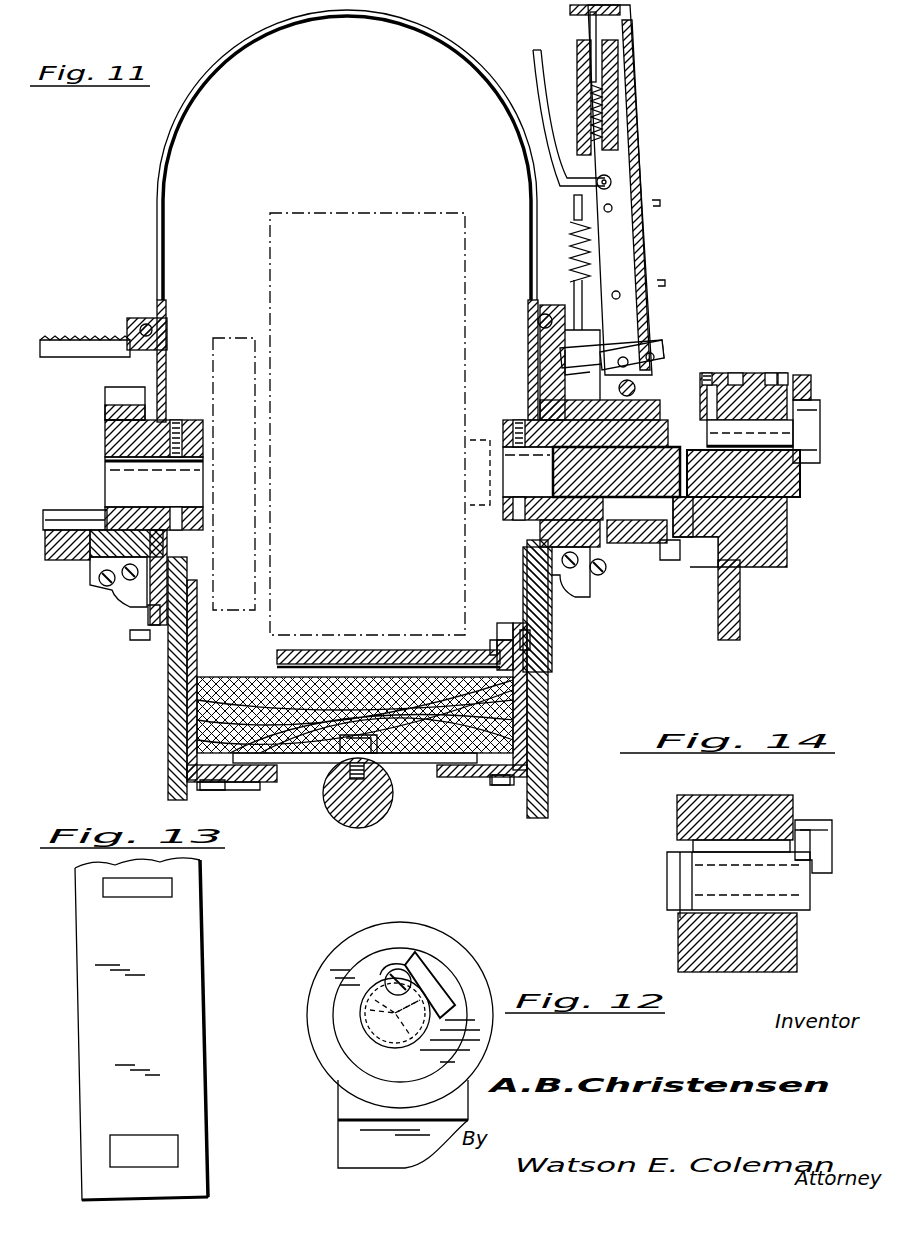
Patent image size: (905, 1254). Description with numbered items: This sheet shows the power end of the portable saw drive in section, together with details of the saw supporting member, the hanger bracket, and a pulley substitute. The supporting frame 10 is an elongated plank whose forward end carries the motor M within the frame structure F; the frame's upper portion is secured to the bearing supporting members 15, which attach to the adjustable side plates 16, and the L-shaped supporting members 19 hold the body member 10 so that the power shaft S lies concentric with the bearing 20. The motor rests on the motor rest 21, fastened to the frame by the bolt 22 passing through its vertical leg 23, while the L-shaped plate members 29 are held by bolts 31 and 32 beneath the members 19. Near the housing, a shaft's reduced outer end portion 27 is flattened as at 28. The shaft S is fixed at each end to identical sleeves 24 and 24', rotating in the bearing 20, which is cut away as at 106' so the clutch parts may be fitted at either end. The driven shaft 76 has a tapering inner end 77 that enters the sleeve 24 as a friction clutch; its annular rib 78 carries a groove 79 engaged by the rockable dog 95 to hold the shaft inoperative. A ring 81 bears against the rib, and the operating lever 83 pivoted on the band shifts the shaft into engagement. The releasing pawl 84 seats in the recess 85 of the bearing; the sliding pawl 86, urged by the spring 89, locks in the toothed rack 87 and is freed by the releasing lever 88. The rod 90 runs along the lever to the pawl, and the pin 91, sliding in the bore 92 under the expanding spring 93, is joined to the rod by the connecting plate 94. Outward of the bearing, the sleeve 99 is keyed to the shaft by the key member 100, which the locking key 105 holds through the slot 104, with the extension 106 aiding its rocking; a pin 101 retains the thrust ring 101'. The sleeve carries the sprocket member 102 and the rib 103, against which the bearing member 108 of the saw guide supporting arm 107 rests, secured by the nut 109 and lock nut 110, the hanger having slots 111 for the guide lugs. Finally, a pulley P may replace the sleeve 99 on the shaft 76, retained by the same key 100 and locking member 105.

In FIG. 11, the frame structure F is at (168, 205).
In FIG. 11, the motor M is at (390, 213).
In FIG. 11, the power shaft S is at (470, 462).
In FIG. 14, the pulley P is at (677, 822).
In FIG. 11, the supporting frame 10 is at (250, 677).
In FIG. 11, the bearing supporting members 15 is at (145, 622).
In FIG. 11, the adjustable side plates 16 is at (168, 722).
In FIG. 11, the L-shaped supporting members 19 is at (192, 677).
In FIG. 11, the bearing 20 is at (68, 560).
In FIG. 11, the motor rest 21 is at (310, 650).
In FIG. 11, the bolt 22 is at (500, 642).
In FIG. 11, the leg 23 is at (503, 625).
In FIG. 11, the sleeve 24 is at (573, 458).
In FIG. 11, the sleeve 24' is at (157, 416).
In FIG. 11, the reduced outer end portion 27 is at (350, 828).
In FIG. 11, the flattened upper surface 28 is at (390, 808).
In FIG. 11, the L-shaped plate members 29 is at (305, 765).
In FIG. 11, the bolts 31 is at (358, 735).
In FIG. 11, the bolts 32 is at (500, 787).
In FIG. 11, the driven shaft 76 is at (800, 498).
In FIG. 12, the driven shaft 76 is at (398, 1030).
In FIG. 14, the driven shaft 76 is at (760, 925).
In FIG. 11, the inner end 77 is at (553, 470).
In FIG. 11, the annular rib 78 is at (642, 545).
In FIG. 11, the annular groove 79 is at (660, 374).
In FIG. 11, the ring 81 is at (636, 390).
In FIG. 11, the operating lever 83 is at (645, 229).
In FIG. 11, the releasing pawl 84 is at (590, 368).
In FIG. 11, the recess 85 is at (540, 390).
In FIG. 11, the longitudinally movable pawl 86 is at (574, 203).
In FIG. 11, the toothed rack 87 is at (80, 340).
In FIG. 11, the releasing lever 88 is at (542, 80).
In FIG. 11, the spring 89 is at (570, 245).
In FIG. 11, the rod 90 is at (620, 35).
In FIG. 11, the pin 91 is at (590, 28).
In FIG. 11, the bore 92 is at (618, 88).
In FIG. 11, the expanding spring 93 is at (618, 128).
In FIG. 11, the connecting plate 94 is at (625, 12).
In FIG. 11, the rockable dog 95 is at (105, 585).
In FIG. 11, the sleeve 99 is at (790, 402).
In FIG. 12, the sleeve 99 is at (352, 1040).
In FIG. 11, the key member 100 is at (762, 375).
In FIG. 14, the key member 100 is at (738, 840).
In FIG. 11, the pin 101 is at (738, 547).
In FIG. 11, the thrust ring 101' is at (660, 589).
In FIG. 11, the sprocket member 102 is at (690, 540).
In FIG. 11, the rib 103 is at (707, 373).
In FIG. 12, the slot 104 is at (395, 1015).
In FIG. 11, the locking key 105 is at (833, 365).
In FIG. 12, the locking key 105 is at (410, 965).
In FIG. 14, the locking key 105 is at (815, 825).
In FIG. 11, the extension 106 is at (818, 447).
In FIG. 12, the extension 106 is at (454, 969).
In FIG. 14, the extension 106 is at (826, 873).
In FIG. 11, the cut-away 106' is at (75, 501).
In FIG. 11, the saw guide supporting arm 107 is at (735, 640).
In FIG. 12, the saw guide supporting arm 107 is at (345, 1155).
In FIG. 13, the saw guide supporting arm 107 is at (182, 953).
In FIG. 11, the bearing member 108 is at (735, 373).
In FIG. 11, the nut 109 is at (770, 373).
In FIG. 11, the lock nut 110 is at (785, 373).
In FIG. 13, the slots 111 is at (165, 885).